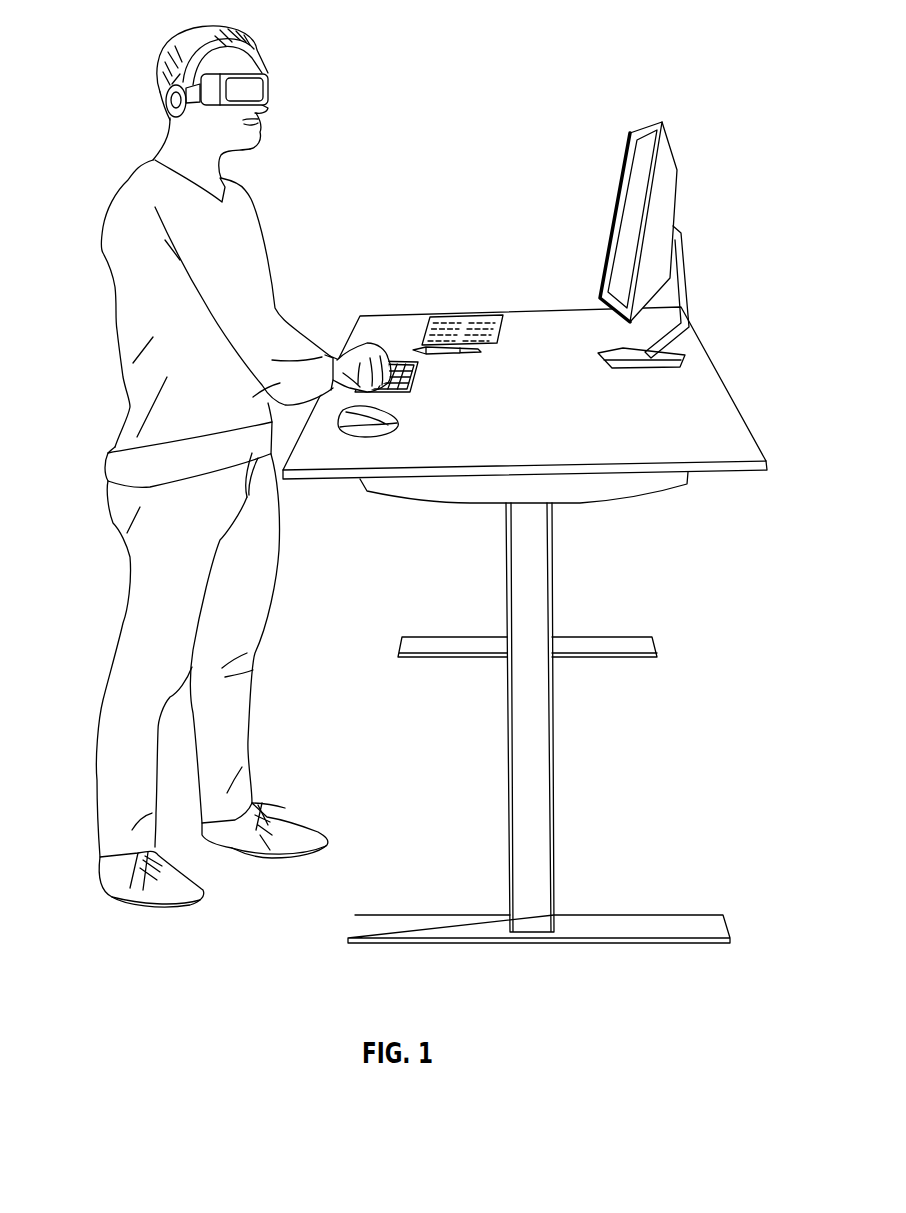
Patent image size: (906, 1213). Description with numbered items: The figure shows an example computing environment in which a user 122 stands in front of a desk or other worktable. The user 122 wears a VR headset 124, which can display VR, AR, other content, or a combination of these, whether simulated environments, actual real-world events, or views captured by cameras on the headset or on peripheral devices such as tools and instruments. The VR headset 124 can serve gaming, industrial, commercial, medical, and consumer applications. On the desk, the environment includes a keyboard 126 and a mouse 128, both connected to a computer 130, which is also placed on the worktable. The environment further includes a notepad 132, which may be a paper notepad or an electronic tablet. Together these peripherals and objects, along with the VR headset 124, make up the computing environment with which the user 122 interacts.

The user 122 is at (128, 180).
The VR headset 124 is at (272, 88).
The keyboard 126 is at (404, 362).
The mouse 128 is at (400, 423).
The computer 130 is at (662, 123).
The notepad 132 is at (483, 320).